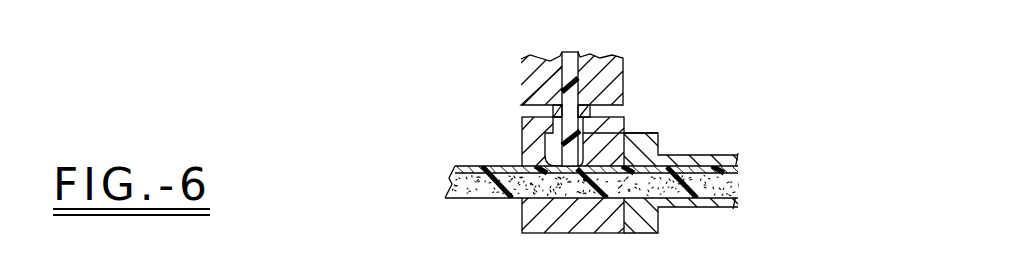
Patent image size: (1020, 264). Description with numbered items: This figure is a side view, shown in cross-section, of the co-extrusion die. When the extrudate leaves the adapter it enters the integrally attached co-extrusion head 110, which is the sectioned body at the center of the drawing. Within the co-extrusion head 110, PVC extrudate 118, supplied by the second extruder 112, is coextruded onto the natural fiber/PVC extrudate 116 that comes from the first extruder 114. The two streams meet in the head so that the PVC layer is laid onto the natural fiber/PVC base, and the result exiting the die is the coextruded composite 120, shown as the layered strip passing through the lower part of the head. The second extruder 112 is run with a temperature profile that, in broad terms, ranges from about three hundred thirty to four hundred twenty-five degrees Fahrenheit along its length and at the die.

The co-extrusion head 110 is at (522, 138).
The second extruder 112 is at (623, 80).
The first extruder 114 is at (682, 153).
The natural fiber/PVC extrudate 116 is at (732, 183).
The PVC extrudate 118 is at (567, 52).
The coextruded composite 120 is at (437, 164).